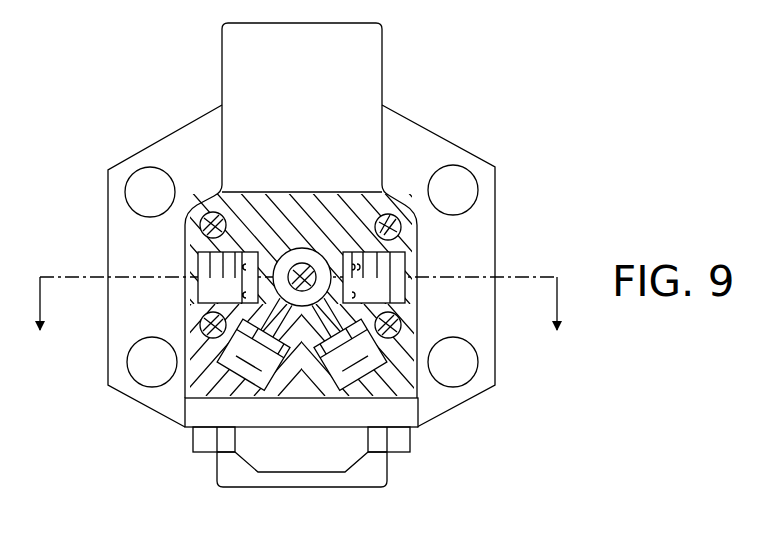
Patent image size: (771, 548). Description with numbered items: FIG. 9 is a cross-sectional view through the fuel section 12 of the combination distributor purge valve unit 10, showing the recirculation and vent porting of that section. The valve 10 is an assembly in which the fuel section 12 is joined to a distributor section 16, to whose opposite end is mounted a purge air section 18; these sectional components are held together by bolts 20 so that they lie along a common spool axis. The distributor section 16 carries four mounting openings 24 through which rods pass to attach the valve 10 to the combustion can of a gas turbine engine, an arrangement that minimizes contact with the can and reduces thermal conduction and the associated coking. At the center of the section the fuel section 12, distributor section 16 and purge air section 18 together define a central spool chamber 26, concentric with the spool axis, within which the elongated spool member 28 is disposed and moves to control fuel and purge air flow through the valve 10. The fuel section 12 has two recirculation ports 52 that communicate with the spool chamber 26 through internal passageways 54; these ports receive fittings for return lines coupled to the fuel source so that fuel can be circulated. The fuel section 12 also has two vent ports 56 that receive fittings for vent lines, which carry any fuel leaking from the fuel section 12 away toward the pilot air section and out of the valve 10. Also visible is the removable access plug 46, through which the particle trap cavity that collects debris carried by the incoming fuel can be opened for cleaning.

The combination distributor purge valve unit 10 is at (300, 319).
The fuel section 12 is at (390, 51).
The distributor section 16 is at (498, 247).
The purge air section 18 is at (318, 492).
The bolts 20 is at (206, 215).
The mounting openings 24 is at (148, 177).
The central spool chamber 26 is at (284, 258).
The spool member 28 is at (306, 268).
The access plug 46 is at (200, 412).
The recirculation ports 52 is at (263, 370).
The internal passageways 54 is at (316, 322).
The vent ports 56 is at (196, 262).